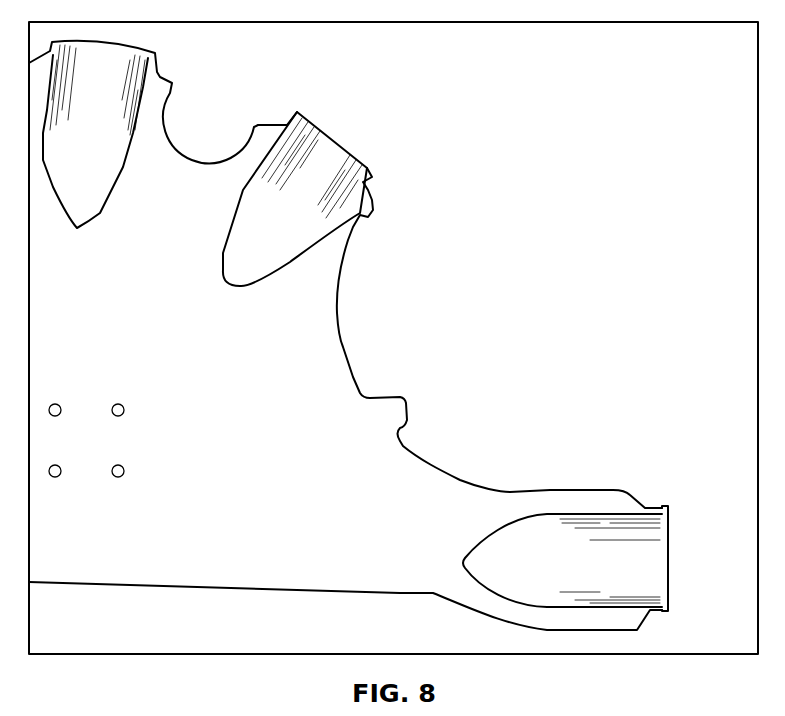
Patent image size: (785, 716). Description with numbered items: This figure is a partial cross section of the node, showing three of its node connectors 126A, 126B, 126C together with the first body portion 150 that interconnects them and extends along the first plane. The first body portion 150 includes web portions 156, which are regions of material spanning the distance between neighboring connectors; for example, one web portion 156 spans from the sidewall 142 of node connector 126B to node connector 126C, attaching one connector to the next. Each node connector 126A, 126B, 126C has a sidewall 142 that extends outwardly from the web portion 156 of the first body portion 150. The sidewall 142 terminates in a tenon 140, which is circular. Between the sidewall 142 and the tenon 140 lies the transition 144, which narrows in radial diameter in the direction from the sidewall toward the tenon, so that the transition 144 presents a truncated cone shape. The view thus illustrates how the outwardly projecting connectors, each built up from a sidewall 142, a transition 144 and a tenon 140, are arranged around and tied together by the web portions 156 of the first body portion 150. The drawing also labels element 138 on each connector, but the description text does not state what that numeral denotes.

The node connector 126A is at (598, 482).
The node connector 126B is at (378, 236).
The node connector 126C is at (190, 98).
The nozzle tip 138 is at (320, 160).
The tenon 140 is at (155, 66).
The sidewall 142 is at (362, 216).
The transition 144 is at (270, 123).
The first body portion 150 is at (240, 403).
The web portion 156 is at (183, 207).